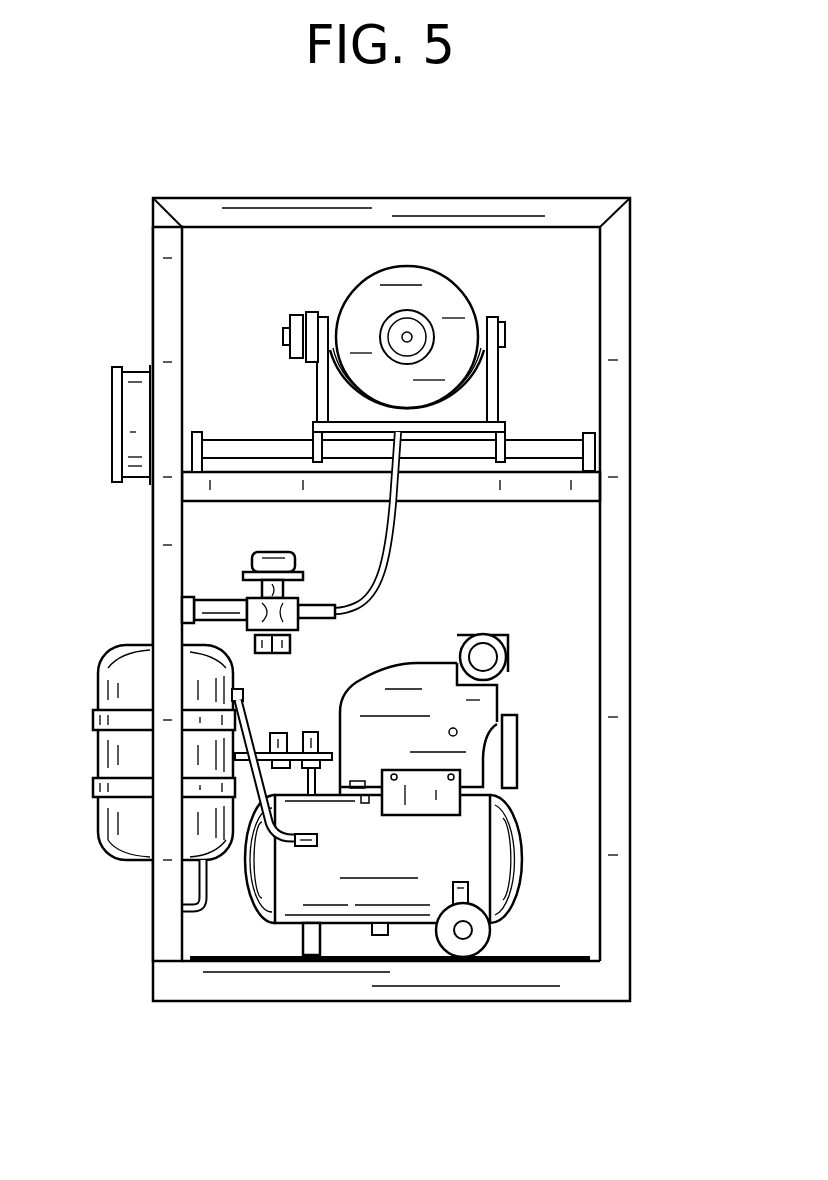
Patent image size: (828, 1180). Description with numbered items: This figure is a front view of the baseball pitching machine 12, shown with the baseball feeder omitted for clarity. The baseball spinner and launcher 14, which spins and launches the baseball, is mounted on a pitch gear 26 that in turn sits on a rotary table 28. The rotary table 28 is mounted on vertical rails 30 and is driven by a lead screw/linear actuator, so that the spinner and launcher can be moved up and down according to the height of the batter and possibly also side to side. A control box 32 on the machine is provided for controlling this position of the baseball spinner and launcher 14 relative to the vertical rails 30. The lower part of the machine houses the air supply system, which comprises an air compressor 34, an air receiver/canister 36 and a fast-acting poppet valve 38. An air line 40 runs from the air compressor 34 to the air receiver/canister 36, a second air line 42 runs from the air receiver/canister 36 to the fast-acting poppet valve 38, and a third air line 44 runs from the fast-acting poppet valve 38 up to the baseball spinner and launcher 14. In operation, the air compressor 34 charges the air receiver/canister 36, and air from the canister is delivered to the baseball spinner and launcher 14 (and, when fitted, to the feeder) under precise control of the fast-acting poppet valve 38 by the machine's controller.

The baseball pitching machine 12 is at (394, 560).
The baseball spinner and launcher 14 is at (336, 277).
The pitch gear 26 is at (312, 362).
The rotary table 28 is at (548, 440).
The vertical rails 30 is at (153, 280).
The control box 32 is at (130, 448).
The air compressor 34 is at (508, 868).
The air receiver/canister 36 is at (98, 757).
The fast-acting poppet valve 38 is at (345, 558).
The air line 40 is at (247, 727).
The air line 42 is at (214, 607).
The air line 44 is at (368, 605).